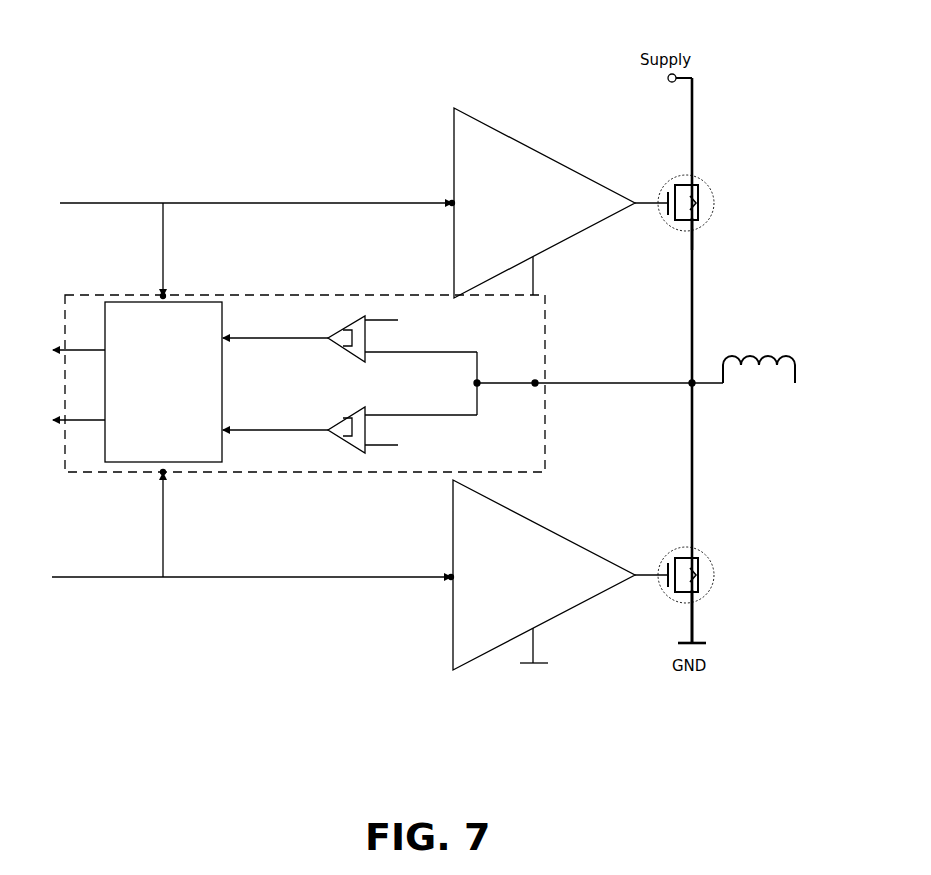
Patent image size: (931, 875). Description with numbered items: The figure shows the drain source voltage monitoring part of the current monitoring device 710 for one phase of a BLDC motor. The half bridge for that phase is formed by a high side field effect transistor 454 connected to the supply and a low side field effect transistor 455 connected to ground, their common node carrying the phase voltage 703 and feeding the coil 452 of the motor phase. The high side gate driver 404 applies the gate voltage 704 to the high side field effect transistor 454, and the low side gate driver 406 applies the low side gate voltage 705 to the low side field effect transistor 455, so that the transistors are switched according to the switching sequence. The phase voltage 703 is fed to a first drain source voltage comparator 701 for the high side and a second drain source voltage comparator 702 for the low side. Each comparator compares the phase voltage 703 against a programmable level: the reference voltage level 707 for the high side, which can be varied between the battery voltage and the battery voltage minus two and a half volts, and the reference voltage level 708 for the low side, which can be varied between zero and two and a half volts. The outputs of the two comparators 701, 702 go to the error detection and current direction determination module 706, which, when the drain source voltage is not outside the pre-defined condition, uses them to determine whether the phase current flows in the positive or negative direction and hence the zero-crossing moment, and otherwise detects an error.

The error detection and current direction determination module 706 is at (118, 298).
The current monitoring device 710 is at (220, 298).
The first drain source voltage comparator 701 is at (342, 322).
The second drain source voltage comparator 702 is at (345, 445).
The reference voltage level for the high side 707 is at (388, 320).
The reference voltage level for the low side 708 is at (393, 445).
The phase voltage 703 is at (640, 383).
The high side gate driver 404 is at (630, 198).
The low side gate driver 406 is at (585, 600).
The gate voltage of the high side FET 704 is at (645, 196).
The low side gate voltage 705 is at (653, 580).
The high side field effect transistor 454 is at (702, 220).
The low side field effect transistor 455 is at (713, 580).
The coil 452 is at (772, 365).